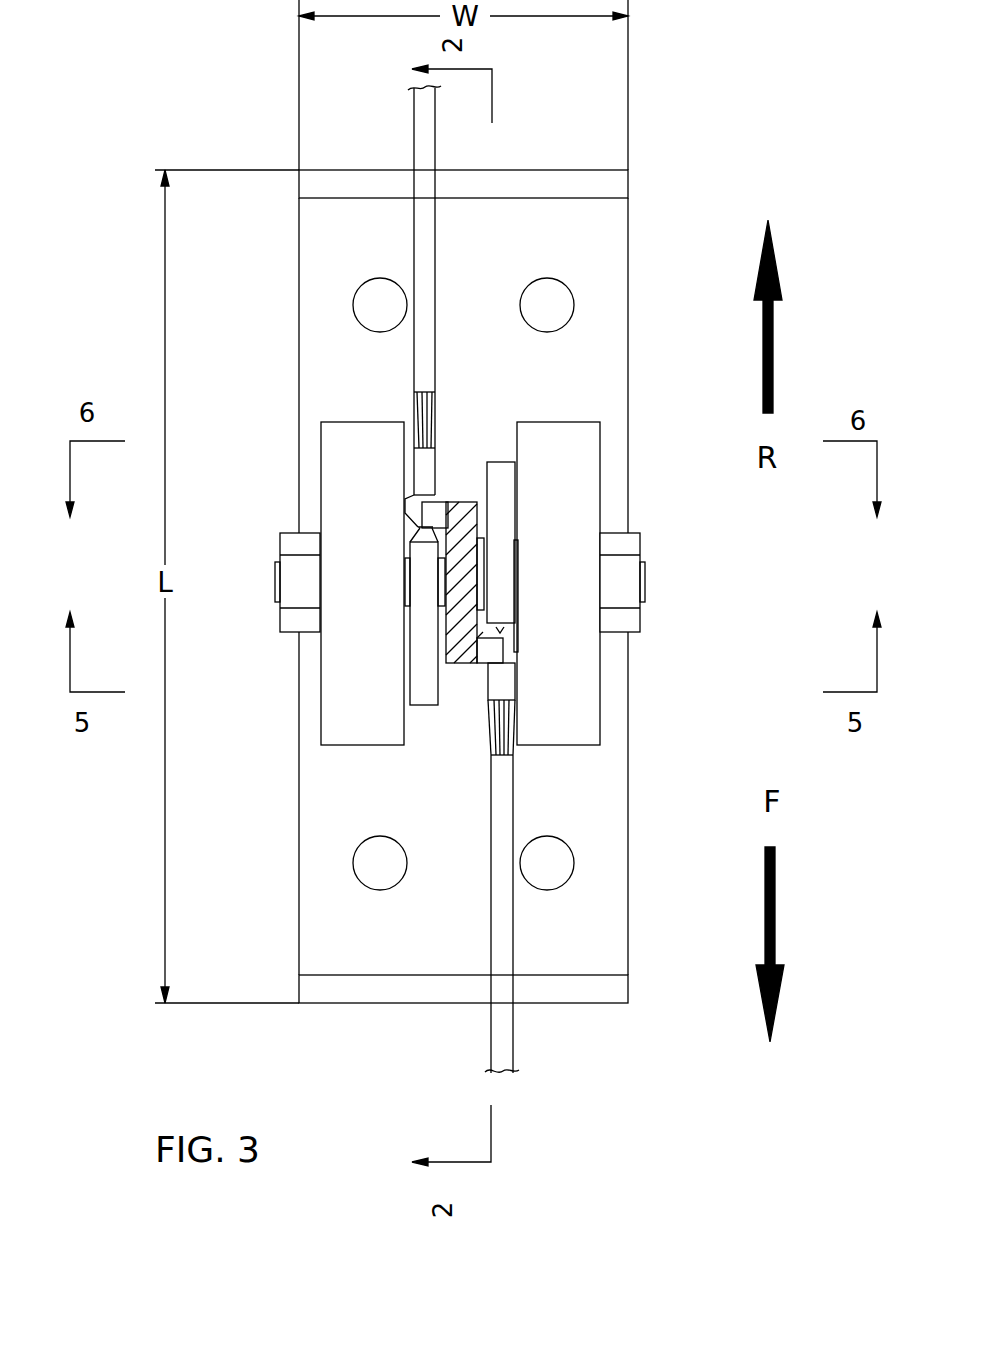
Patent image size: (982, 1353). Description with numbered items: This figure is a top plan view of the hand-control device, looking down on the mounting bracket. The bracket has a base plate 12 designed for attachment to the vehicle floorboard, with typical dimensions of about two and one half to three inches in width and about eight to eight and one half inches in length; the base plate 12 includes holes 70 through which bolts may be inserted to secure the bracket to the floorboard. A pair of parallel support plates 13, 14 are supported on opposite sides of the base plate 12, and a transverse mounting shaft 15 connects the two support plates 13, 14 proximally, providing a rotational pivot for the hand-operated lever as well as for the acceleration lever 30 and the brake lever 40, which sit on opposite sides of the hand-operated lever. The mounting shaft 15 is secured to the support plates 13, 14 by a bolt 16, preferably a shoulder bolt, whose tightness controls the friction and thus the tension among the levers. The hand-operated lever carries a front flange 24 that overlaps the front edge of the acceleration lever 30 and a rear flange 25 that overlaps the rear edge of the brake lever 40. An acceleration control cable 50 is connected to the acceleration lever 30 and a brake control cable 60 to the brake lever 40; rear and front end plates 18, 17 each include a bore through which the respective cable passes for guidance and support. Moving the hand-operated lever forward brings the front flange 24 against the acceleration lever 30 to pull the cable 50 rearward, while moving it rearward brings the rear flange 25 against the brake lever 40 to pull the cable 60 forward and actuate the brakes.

The base plate 12 is at (494, 596).
The support plate 13 is at (574, 432).
The support plate 14 is at (363, 432).
The transverse mounting shaft 15 is at (405, 570).
The bolt 16 is at (287, 618).
The front end plate 17 is at (576, 993).
The rear end plate 18 is at (541, 183).
The front flange 24 is at (487, 650).
The rear flange 25 is at (437, 512).
The acceleration lever 30 is at (500, 468).
The brake lever 40 is at (424, 693).
The acceleration control cable 50 is at (503, 928).
The brake control cable 60 is at (438, 246).
The hole 70 is at (365, 306).